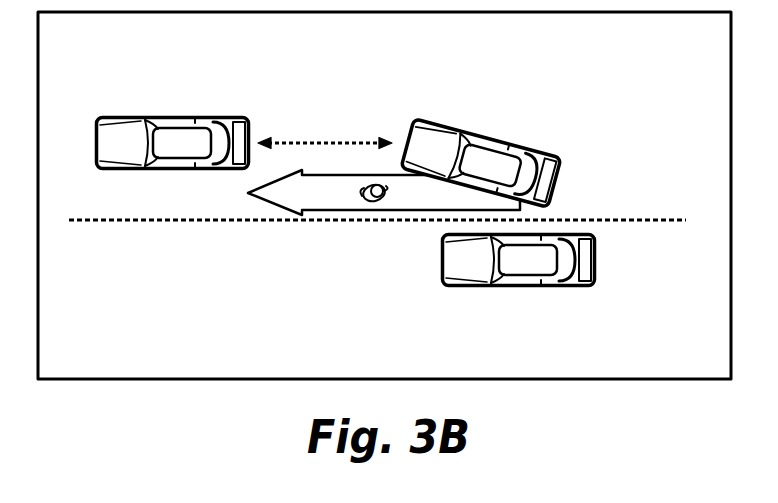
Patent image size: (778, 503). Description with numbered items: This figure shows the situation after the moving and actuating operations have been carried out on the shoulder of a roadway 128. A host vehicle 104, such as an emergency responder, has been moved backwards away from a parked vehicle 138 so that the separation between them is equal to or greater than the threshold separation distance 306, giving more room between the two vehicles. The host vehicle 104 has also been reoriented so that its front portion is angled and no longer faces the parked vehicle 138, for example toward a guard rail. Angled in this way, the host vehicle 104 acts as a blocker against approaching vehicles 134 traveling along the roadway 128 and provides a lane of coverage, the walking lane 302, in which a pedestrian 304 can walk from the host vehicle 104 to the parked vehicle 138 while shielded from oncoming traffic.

The host vehicle 104 is at (450, 140).
The roadway 128 is at (225, 302).
The approaching vehicles 134 is at (463, 262).
The parked vehicle 138 is at (178, 140).
The walking lane 302 is at (387, 210).
The pedestrian 304 is at (360, 197).
The threshold separation distance 306 is at (322, 142).